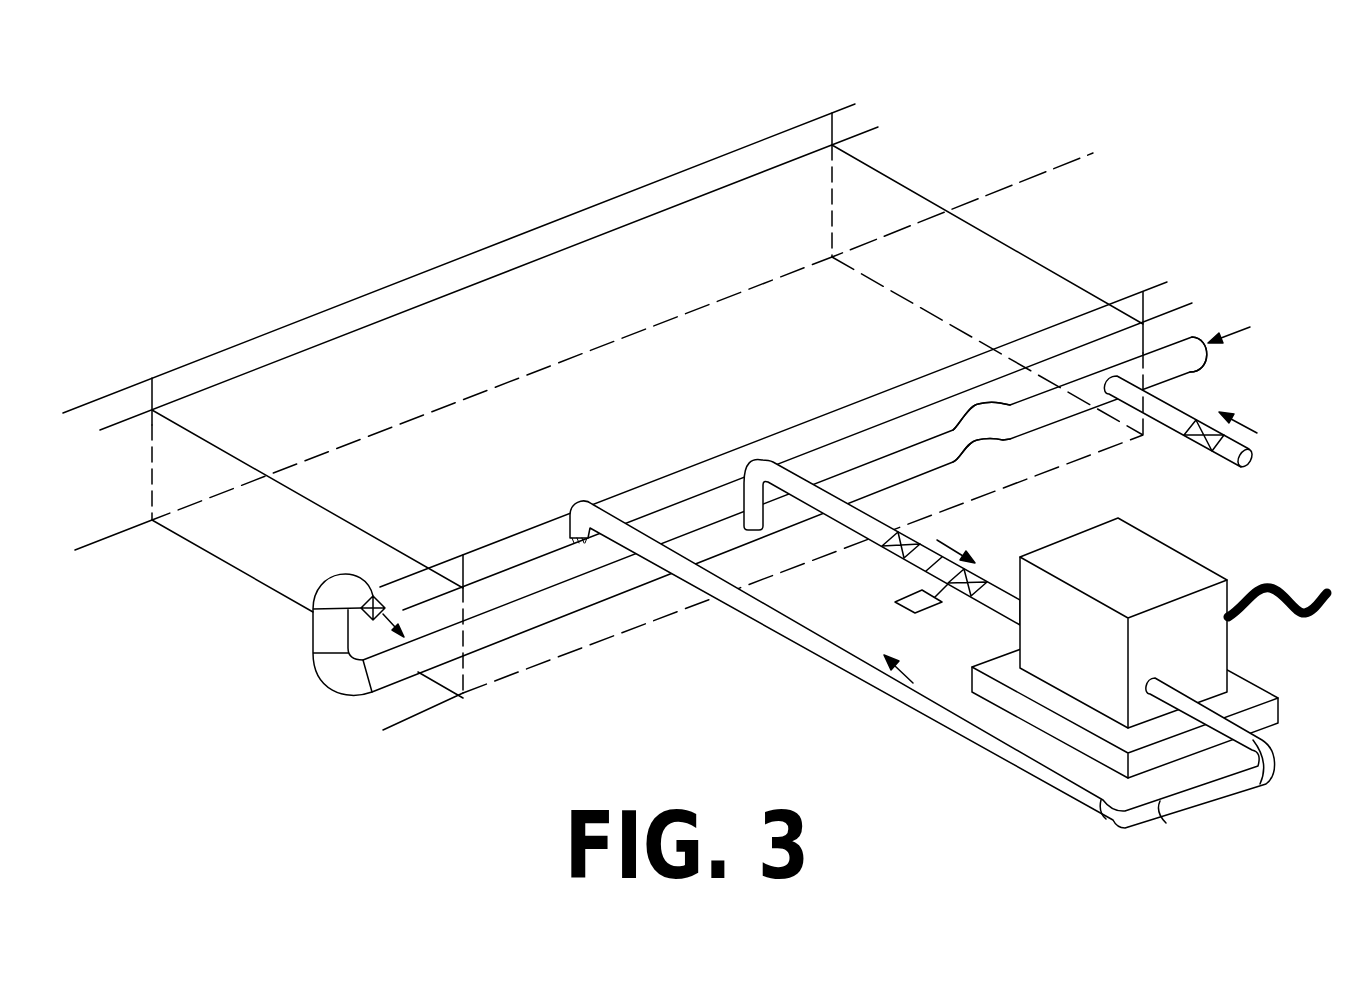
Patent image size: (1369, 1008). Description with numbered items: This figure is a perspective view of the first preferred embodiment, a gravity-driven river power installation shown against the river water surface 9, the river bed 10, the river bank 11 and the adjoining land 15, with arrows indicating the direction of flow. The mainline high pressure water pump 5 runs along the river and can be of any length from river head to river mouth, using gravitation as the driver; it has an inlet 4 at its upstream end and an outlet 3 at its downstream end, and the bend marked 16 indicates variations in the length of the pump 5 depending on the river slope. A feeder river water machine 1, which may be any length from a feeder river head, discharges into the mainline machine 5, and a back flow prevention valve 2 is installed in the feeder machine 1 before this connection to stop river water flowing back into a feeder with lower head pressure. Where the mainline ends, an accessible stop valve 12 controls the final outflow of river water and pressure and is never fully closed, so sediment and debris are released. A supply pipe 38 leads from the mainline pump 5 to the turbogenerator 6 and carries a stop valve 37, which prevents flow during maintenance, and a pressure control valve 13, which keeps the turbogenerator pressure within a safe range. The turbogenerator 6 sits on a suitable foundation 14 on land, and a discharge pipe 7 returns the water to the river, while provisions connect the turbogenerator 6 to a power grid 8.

The feeder river water machine 1 is at (1258, 460).
The back flow prevention valve 2 is at (1190, 441).
The outlet 3 is at (400, 616).
The inlet 4 is at (1203, 337).
The mainline high pressure water pump 5 is at (543, 628).
The turbogenerator 6 is at (1165, 535).
The discharge pipe 7 is at (577, 500).
The power grid 8 is at (1265, 585).
The river water surface 9 is at (405, 316).
The river bed 10 is at (937, 310).
The river bank 11 is at (830, 202).
The stop valve 12 is at (387, 600).
The pressure control valve 13 is at (895, 603).
The foundation 14 is at (1290, 700).
The land 15 is at (372, 294).
The variations in length of pump 16 is at (975, 405).
The stop valve 37 is at (893, 548).
The supply pipe 38 is at (885, 525).